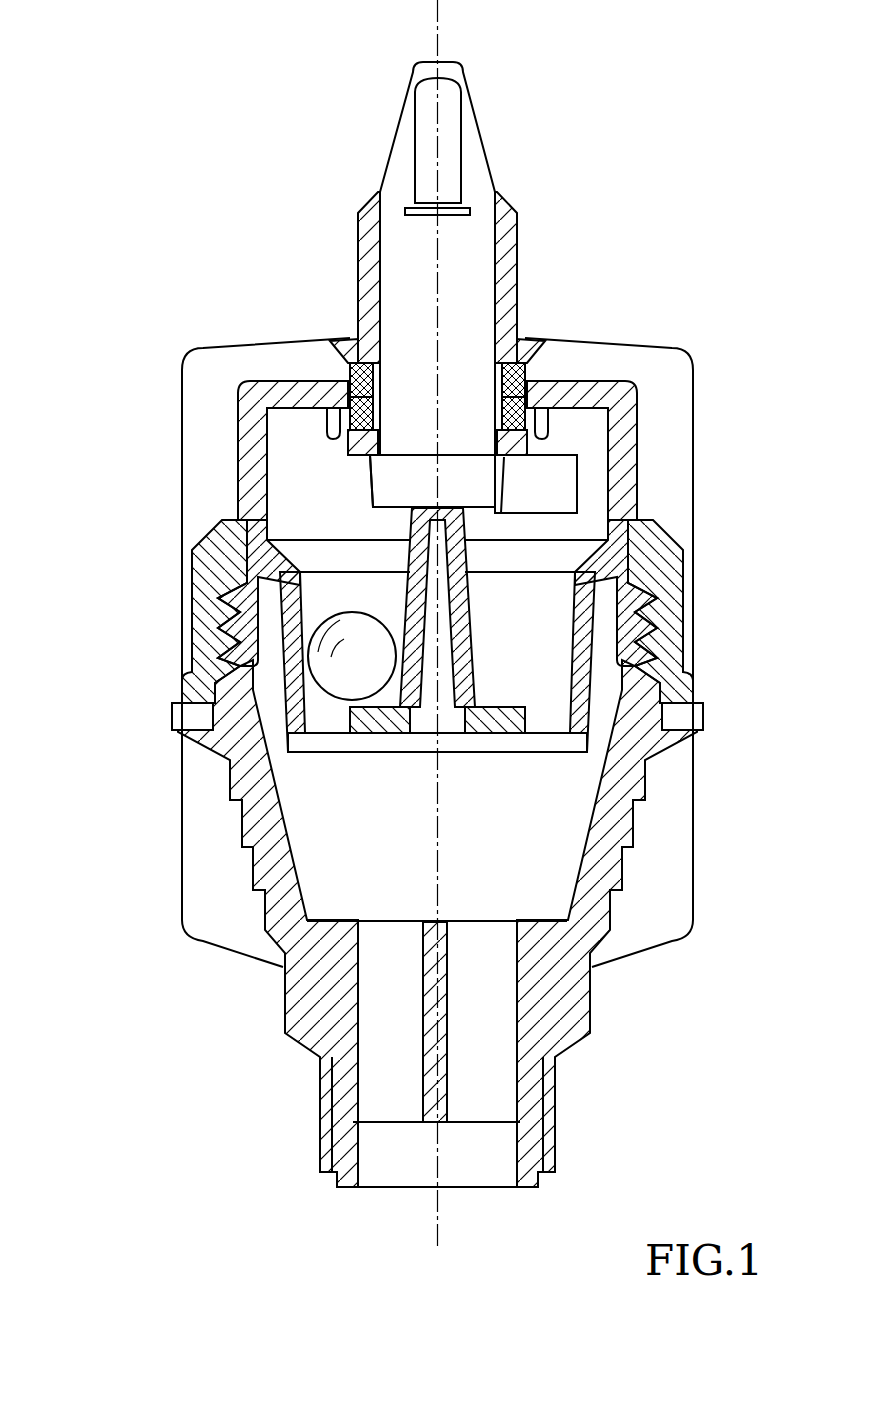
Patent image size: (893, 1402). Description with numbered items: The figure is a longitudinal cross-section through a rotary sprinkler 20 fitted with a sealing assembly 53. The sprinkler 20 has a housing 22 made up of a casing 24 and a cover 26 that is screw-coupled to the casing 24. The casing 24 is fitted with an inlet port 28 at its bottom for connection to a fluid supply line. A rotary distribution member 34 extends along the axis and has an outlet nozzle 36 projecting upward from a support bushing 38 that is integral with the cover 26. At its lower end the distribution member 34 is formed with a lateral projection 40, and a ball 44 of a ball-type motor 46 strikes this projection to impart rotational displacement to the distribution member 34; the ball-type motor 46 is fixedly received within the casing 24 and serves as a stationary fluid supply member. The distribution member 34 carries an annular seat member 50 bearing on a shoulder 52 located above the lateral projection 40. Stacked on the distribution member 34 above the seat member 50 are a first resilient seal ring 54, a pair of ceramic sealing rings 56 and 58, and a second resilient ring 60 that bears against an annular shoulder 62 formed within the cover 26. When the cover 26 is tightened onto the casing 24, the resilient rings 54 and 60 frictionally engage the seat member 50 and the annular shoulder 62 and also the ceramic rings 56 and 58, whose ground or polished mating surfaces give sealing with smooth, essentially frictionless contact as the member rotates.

The sprinkler 20 is at (125, 972).
The housing 22 is at (689, 875).
The casing 24 is at (610, 813).
The cover 26 is at (628, 465).
The inlet port 28 is at (465, 1190).
The rotary distribution member 34 is at (510, 258).
The outlet nozzle 36 is at (452, 130).
The support bushing 38 is at (513, 299).
The lateral projection 40 is at (557, 477).
The ball 44 is at (352, 660).
The ball-type motor 46 is at (337, 590).
The annular seat member 50 is at (413, 452).
The shoulder 52 is at (375, 483).
The sealing assembly 53 is at (543, 380).
The first resilient seal ring 54 is at (347, 433).
The ceramic sealing ring 56 is at (337, 415).
The ceramic sealing ring 58 is at (322, 376).
The second resilient ring 60 is at (322, 340).
The annular shoulder 62 is at (495, 370).